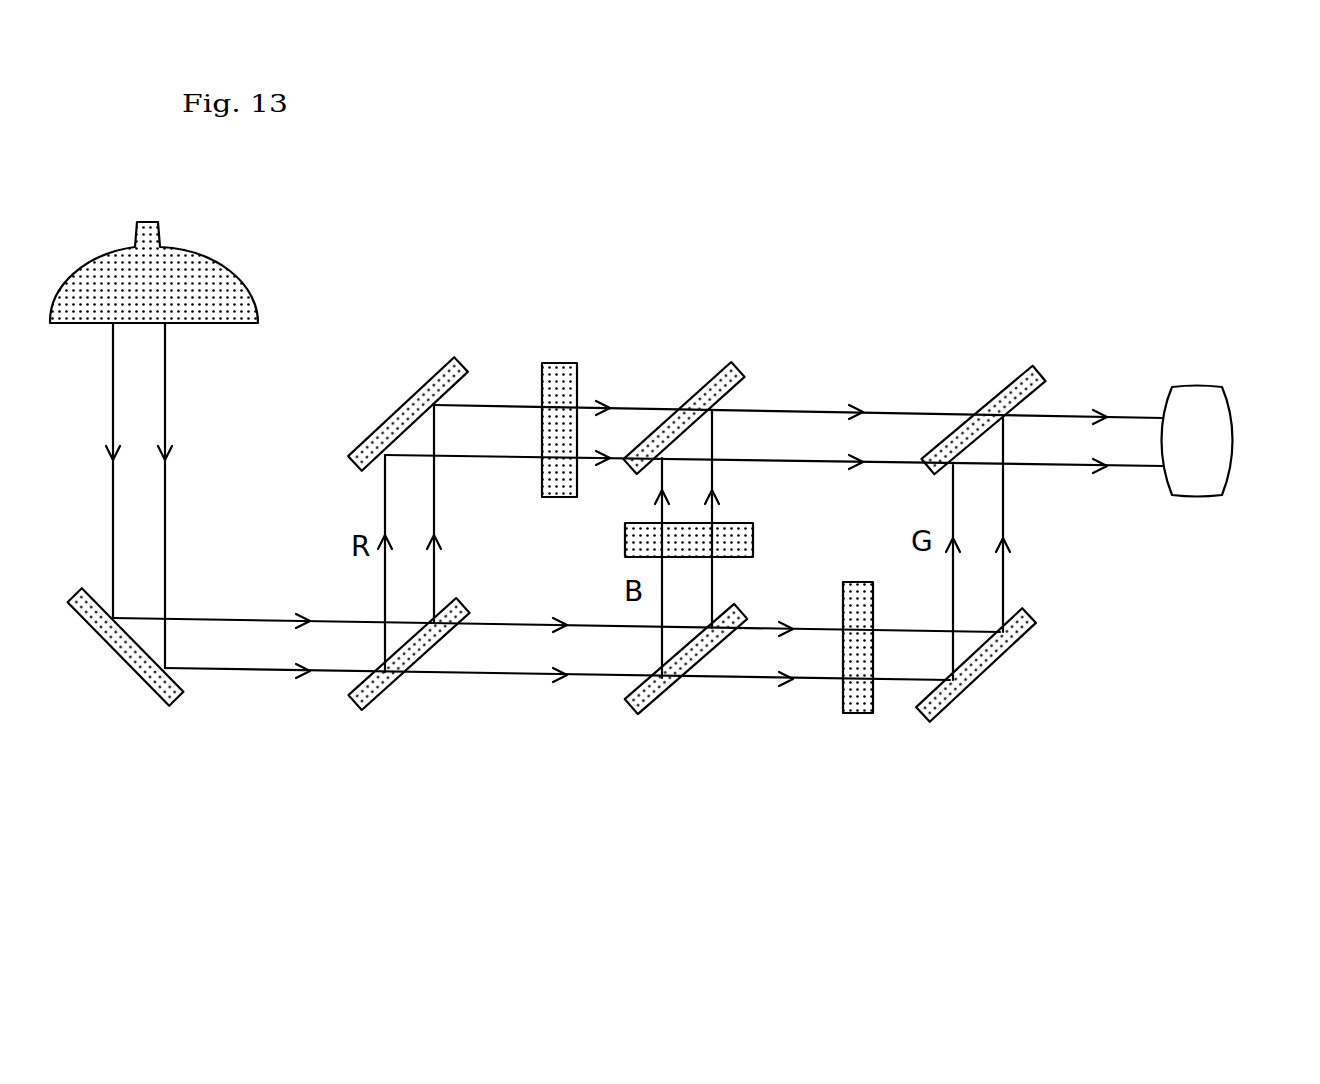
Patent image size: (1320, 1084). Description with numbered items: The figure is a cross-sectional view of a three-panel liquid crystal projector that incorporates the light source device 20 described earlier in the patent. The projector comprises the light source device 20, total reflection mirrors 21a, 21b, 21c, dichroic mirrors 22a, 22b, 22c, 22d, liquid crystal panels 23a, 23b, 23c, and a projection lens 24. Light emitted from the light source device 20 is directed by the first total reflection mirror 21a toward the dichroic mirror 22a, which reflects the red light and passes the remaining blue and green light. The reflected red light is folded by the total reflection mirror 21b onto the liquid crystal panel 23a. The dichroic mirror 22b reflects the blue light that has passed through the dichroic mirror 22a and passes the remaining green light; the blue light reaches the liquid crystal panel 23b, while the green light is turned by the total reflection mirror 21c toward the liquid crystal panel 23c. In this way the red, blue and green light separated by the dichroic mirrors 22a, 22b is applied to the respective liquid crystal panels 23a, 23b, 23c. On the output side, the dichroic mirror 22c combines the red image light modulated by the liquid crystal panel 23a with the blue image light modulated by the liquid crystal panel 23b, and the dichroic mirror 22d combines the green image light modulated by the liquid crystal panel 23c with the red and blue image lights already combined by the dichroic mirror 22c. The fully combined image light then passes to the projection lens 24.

The light source device 20 is at (200, 257).
The total reflection mirror 21a is at (148, 683).
The total reflection mirror 21b is at (458, 362).
The total reflection mirror 21c is at (1035, 620).
The dichroic mirror 22a is at (577, 812).
The dichroic mirror 22b is at (640, 717).
The dichroic mirror 22c is at (943, 251).
The dichroic mirror 22d is at (1025, 375).
The liquid crystal panel 23a is at (568, 362).
The liquid crystal panel 23b is at (748, 558).
The liquid crystal panel 23c is at (858, 713).
The projection lens 24 is at (1227, 457).